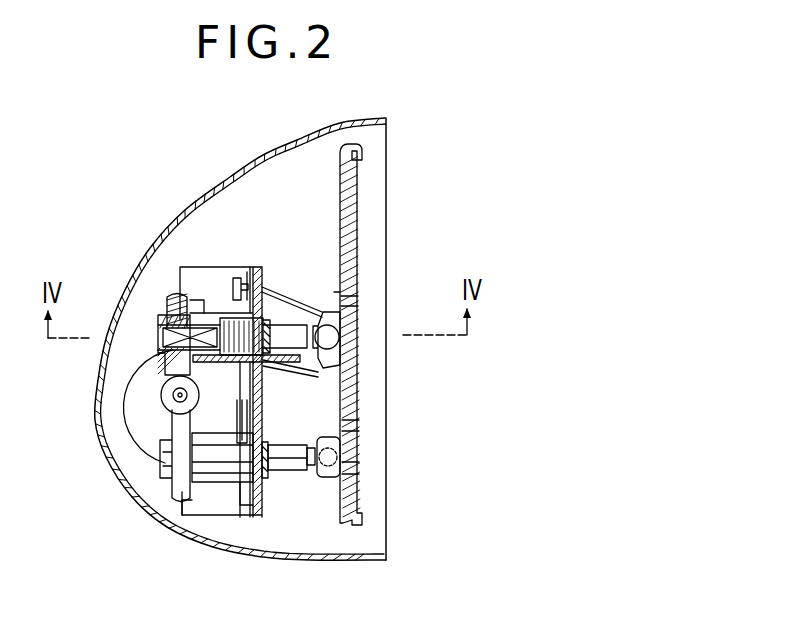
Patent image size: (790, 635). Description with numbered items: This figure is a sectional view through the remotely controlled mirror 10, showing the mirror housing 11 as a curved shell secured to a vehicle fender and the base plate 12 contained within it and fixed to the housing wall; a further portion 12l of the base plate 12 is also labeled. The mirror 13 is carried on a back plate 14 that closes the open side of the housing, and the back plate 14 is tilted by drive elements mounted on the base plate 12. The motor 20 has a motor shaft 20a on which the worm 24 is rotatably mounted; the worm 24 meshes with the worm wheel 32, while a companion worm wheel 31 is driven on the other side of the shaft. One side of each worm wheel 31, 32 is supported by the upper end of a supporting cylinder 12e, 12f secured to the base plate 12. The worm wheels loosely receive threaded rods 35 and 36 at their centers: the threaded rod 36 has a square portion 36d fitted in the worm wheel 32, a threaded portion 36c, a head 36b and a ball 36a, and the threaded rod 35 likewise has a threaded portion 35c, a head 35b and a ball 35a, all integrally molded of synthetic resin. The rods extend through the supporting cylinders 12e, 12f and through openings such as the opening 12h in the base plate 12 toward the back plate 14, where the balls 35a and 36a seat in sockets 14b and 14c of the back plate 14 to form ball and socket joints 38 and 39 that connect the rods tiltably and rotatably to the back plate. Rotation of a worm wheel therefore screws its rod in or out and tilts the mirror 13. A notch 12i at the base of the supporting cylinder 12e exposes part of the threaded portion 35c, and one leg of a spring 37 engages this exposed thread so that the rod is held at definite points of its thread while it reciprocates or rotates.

The remotely controlled mirror 10 is at (439, 167).
The mirror housing 11 is at (266, 155).
The base plate 12 is at (262, 266).
The supporting cylinder 12e is at (184, 516).
The supporting cylinder 12f is at (203, 312).
The opening 12h is at (268, 358).
The notch 12i is at (242, 505).
The housing inner wall 12l is at (247, 280).
The mirror 13 is at (355, 468).
The back plate 14 is at (358, 527).
The socket 14b is at (343, 426).
The socket 14c is at (360, 303).
The motor 20 is at (127, 430).
The motor shaft 20a is at (172, 392).
The worm 24 is at (167, 383).
The worm wheel 31 is at (172, 490).
The worm wheel 32 is at (174, 298).
The threaded rod 35 is at (286, 474).
The ball 35a is at (340, 458).
The head 35b is at (313, 468).
The threaded portion 35c is at (266, 478).
The threaded rod 36 is at (288, 300).
The ball 36a is at (333, 337).
The head 36b is at (342, 368).
The threaded portion 36c is at (236, 287).
The square portion 36d is at (202, 328).
The spring 37 is at (250, 402).
The ball and socket joint 38 is at (342, 417).
The ball and socket joint 39 is at (334, 291).